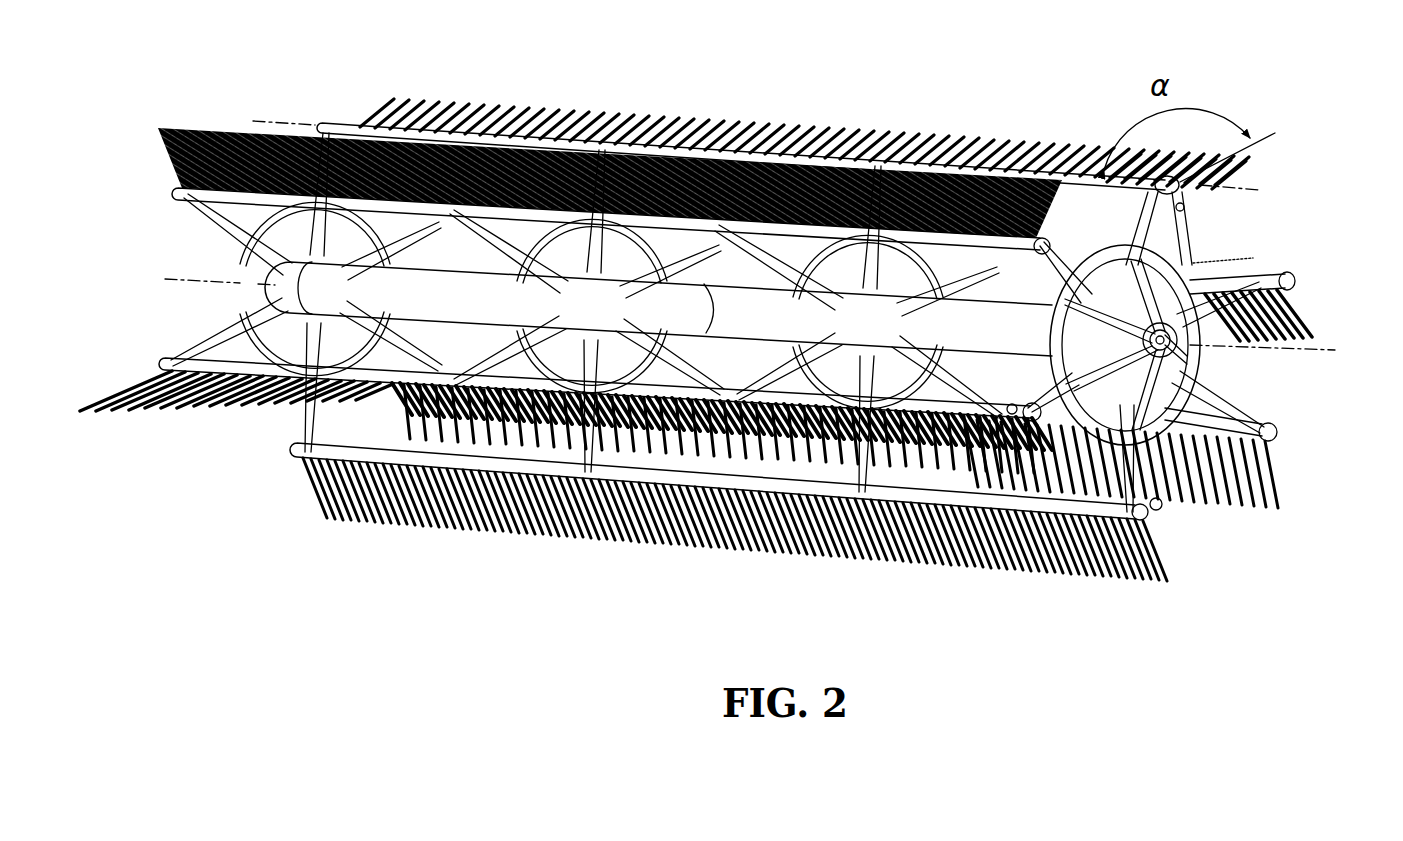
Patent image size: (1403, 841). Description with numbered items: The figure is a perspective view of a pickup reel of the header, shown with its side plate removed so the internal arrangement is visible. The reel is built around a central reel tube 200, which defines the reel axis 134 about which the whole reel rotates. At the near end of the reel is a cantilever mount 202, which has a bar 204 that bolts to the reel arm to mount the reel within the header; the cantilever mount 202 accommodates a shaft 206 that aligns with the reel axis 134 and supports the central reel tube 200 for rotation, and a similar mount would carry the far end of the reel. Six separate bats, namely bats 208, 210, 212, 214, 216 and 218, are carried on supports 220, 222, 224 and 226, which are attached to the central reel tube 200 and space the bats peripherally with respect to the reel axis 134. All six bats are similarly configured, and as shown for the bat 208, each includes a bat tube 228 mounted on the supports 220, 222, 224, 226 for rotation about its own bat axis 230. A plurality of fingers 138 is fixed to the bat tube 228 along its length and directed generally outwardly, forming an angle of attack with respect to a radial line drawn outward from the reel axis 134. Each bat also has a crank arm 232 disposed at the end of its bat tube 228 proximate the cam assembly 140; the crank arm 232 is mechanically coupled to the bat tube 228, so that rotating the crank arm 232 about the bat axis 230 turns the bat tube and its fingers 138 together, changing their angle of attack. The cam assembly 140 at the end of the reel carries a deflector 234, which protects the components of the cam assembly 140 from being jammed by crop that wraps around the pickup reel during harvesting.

The reel axis 134 is at (1362, 352).
The fingers 138 is at (733, 118).
The cam assembly 140 is at (1192, 430).
The central reel tube 200 is at (335, 292).
The cantilever mount 202 is at (1190, 337).
The bar 204 is at (1187, 340).
The shaft 206 is at (1187, 347).
The bat 208 is at (1224, 177).
The bat 210 is at (164, 180).
The bat 212 is at (176, 417).
The bat 214 is at (291, 484).
The bat 216 is at (1294, 455).
The bat 218 is at (1312, 287).
The support 220 is at (240, 230).
The support 222 is at (483, 367).
The support 224 is at (747, 393).
The support 226 is at (1130, 217).
The bat tube 228 is at (907, 160).
The bat axis 230 is at (1248, 190).
The crank arm 232 is at (1180, 207).
The deflector 234 is at (1164, 432).